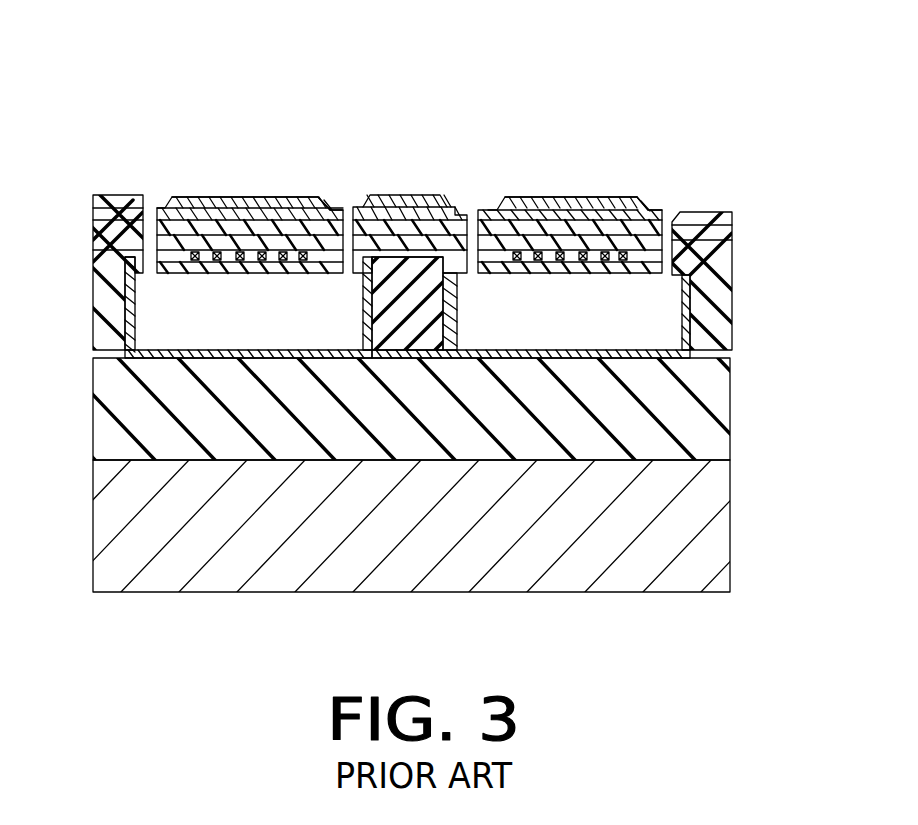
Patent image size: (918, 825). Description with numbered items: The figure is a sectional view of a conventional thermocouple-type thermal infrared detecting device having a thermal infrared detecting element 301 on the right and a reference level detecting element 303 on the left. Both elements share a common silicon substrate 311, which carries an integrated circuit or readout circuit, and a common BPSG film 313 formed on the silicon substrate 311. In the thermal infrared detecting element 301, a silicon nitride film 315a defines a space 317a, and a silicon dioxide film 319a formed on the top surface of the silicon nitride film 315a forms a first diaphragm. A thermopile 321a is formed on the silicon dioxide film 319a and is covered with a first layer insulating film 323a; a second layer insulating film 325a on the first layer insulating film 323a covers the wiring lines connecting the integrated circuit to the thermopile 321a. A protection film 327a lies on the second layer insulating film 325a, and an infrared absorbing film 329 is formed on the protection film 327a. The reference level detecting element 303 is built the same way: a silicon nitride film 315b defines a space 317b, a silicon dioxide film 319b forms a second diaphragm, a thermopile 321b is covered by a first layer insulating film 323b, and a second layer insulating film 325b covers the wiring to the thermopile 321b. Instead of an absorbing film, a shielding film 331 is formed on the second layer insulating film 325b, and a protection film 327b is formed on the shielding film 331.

The thermal infrared detecting element 301 is at (717, 95).
The reference level detecting element 303 is at (277, 43).
The silicon substrate 311 is at (715, 535).
The BPSG film 313 is at (716, 410).
The silicon nitride film 315a is at (457, 313).
The silicon nitride film 315b is at (132, 334).
The space 317a is at (666, 284).
The space 317b is at (160, 300).
The silicon dioxide film 319a is at (478, 220).
The silicon dioxide film 319b is at (165, 208).
The thermopile 321a is at (502, 214).
The thermopile 321b is at (170, 208).
The first layer insulating film 323a is at (570, 235).
The first layer insulating film 323b is at (236, 250).
The second layer insulating film 325a is at (610, 210).
The second layer insulating film 325b is at (300, 220).
The protection film 327a is at (640, 200).
The protection film 327b is at (275, 197).
The infrared absorbing film 329 is at (650, 202).
The shielding film 331 is at (325, 203).